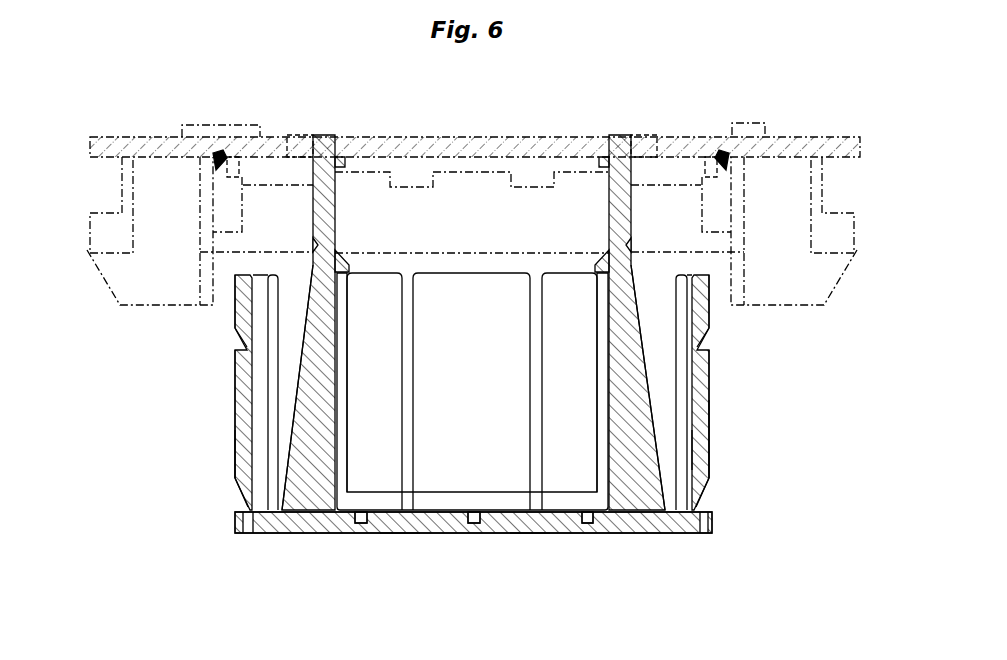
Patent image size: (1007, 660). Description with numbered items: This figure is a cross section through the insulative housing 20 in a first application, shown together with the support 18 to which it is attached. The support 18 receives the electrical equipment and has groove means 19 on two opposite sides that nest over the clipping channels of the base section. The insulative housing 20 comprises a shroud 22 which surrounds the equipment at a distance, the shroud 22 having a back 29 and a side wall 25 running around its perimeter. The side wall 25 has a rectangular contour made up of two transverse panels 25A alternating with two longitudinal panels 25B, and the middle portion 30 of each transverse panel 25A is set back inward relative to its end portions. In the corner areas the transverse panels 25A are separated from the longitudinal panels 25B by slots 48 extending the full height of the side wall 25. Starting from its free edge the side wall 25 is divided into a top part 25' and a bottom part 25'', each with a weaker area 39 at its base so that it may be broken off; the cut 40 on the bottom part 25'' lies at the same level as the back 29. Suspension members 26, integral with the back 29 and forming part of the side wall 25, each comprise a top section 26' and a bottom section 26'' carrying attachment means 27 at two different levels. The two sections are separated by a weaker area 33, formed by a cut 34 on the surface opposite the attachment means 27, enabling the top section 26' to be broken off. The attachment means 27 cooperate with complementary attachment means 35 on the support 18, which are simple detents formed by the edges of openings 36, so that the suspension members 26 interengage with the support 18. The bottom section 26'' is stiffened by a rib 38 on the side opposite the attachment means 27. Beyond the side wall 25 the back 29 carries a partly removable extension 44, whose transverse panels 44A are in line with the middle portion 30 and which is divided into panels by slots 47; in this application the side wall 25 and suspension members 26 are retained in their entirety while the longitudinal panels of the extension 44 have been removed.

The support 18 is at (847, 110).
The groove means 19 is at (90, 185).
The insulative housing 20 is at (712, 545).
The shroud 22 is at (710, 446).
The side wall 25 is at (419, 392).
The top part of the side wall 25' is at (473, 304).
The bottom part of the side wall 25'' is at (474, 454).
The transverse panel 25A is at (451, 262).
The longitudinal panel 25B is at (240, 371).
The suspension member 26 is at (473, 274).
The top section of the suspension member 26' is at (472, 198).
The bottom section of the suspension member 26'' is at (472, 391).
The attachment means 27 is at (350, 157).
The back 29 is at (531, 535).
The middle portion of the transverse panel 30 is at (481, 273).
The weaker area 33 is at (340, 248).
The cut 34 is at (312, 247).
The complementary attachment means 35 is at (338, 160).
The opening 36 is at (219, 152).
The rib 38 is at (300, 404).
The weaker area 39 is at (258, 350).
The cut 40 is at (240, 341).
The extension 44 is at (548, 535).
The transverse panel of the extension 44A is at (401, 535).
The slot 47 is at (361, 523).
The slot 48 is at (263, 275).